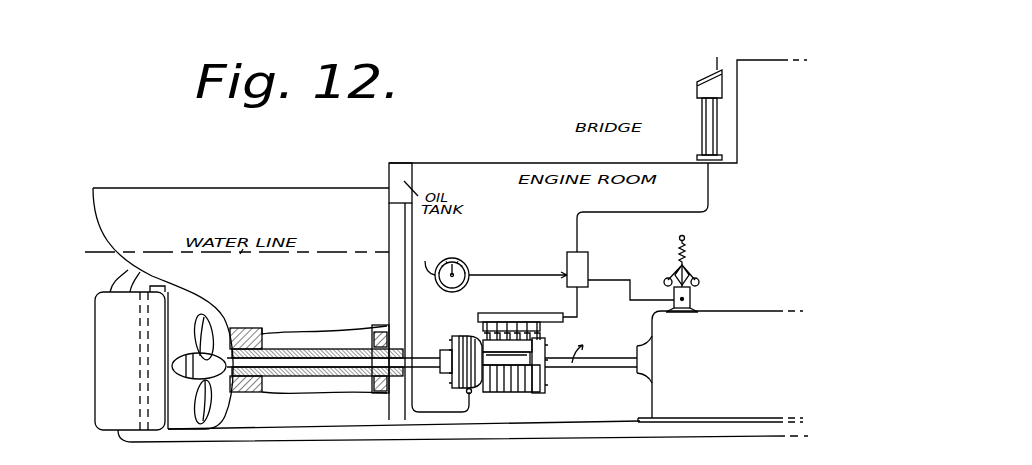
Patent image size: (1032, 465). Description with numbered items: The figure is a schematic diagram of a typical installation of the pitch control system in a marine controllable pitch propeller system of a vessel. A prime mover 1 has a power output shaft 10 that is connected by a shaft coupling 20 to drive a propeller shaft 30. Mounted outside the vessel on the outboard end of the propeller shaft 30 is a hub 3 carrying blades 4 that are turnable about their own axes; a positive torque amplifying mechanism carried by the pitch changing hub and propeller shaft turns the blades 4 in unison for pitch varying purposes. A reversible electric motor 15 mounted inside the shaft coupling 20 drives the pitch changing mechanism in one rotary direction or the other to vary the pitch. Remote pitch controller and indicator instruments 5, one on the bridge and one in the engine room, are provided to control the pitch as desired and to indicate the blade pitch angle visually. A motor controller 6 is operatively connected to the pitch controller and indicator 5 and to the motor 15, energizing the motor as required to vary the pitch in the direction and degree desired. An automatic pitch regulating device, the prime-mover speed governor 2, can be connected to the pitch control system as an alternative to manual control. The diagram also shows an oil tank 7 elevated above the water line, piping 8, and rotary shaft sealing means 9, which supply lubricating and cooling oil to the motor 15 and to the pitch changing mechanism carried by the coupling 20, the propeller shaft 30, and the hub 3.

The prime mover 1 is at (668, 389).
The prime-mover speed governor 2 is at (700, 282).
The hub 3 is at (192, 352).
The blades 4 is at (205, 312).
The pitch controller and indicator instrument 5 is at (467, 285).
The motor controller 6 is at (575, 272).
The oil tank 7 is at (389, 170).
The piping 8 is at (412, 307).
The rotary shaft sealing means 9 is at (472, 335).
The power output shaft 10 is at (590, 364).
The reversible electric motor 15 is at (512, 355).
The shaft coupling 20 is at (526, 397).
The propeller shaft 30 is at (320, 360).